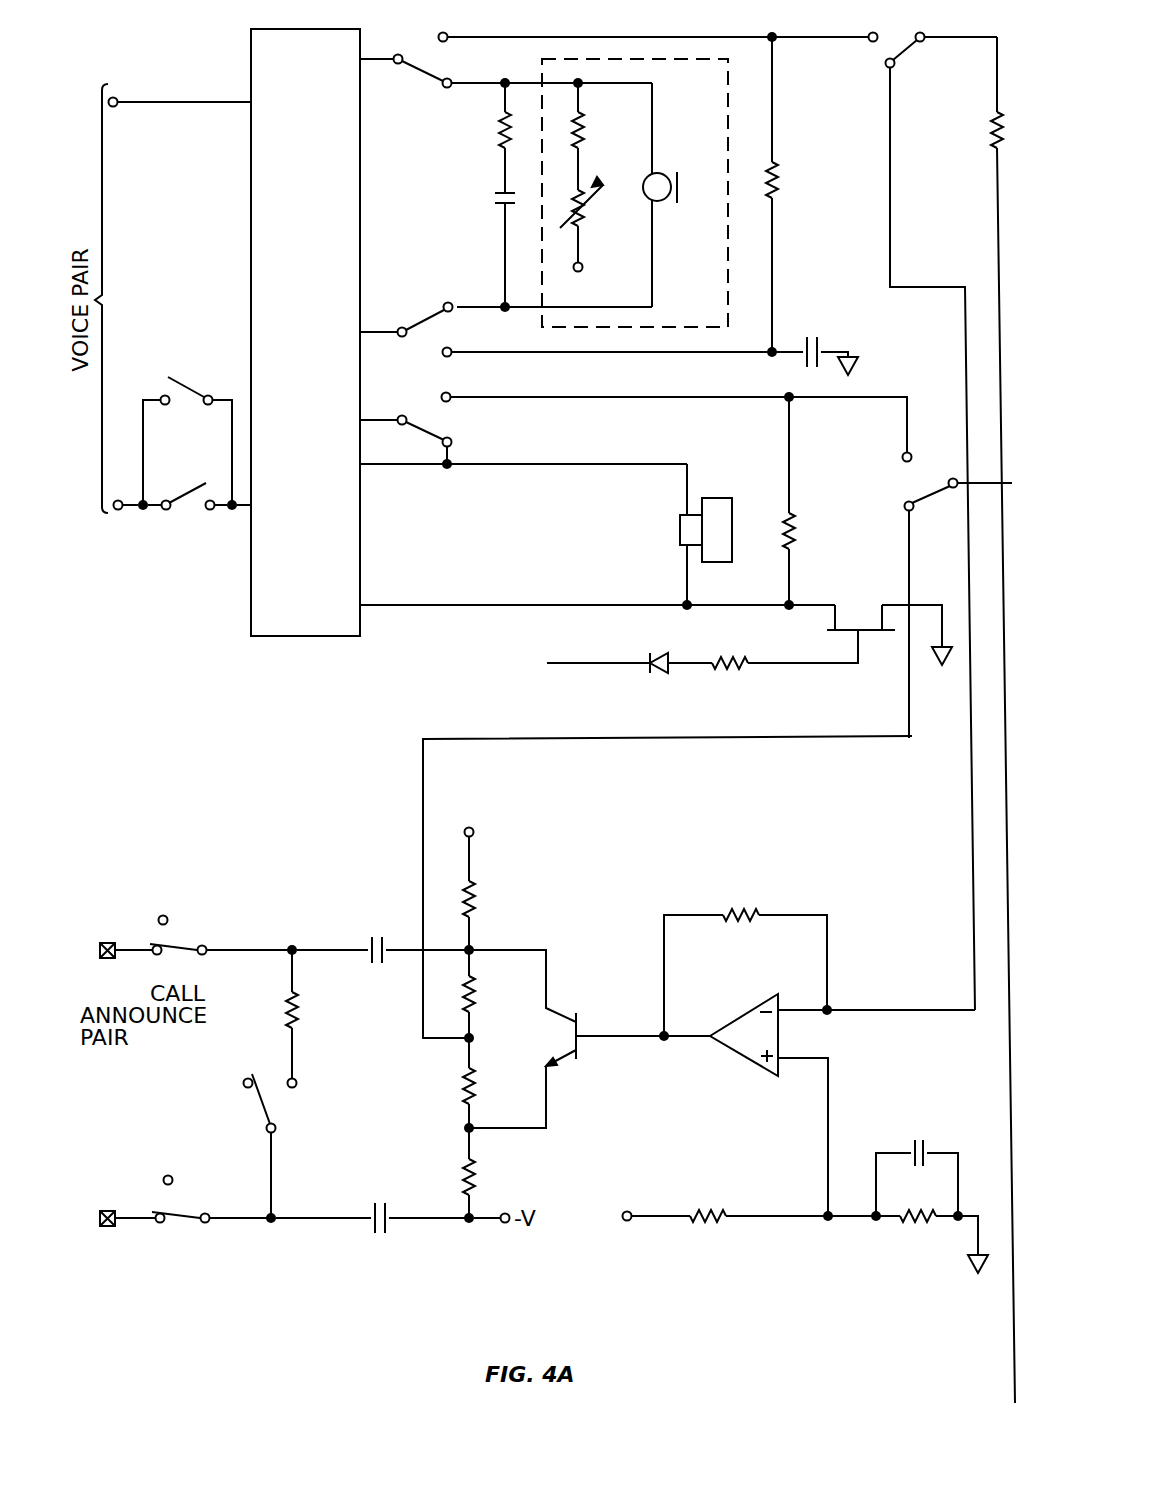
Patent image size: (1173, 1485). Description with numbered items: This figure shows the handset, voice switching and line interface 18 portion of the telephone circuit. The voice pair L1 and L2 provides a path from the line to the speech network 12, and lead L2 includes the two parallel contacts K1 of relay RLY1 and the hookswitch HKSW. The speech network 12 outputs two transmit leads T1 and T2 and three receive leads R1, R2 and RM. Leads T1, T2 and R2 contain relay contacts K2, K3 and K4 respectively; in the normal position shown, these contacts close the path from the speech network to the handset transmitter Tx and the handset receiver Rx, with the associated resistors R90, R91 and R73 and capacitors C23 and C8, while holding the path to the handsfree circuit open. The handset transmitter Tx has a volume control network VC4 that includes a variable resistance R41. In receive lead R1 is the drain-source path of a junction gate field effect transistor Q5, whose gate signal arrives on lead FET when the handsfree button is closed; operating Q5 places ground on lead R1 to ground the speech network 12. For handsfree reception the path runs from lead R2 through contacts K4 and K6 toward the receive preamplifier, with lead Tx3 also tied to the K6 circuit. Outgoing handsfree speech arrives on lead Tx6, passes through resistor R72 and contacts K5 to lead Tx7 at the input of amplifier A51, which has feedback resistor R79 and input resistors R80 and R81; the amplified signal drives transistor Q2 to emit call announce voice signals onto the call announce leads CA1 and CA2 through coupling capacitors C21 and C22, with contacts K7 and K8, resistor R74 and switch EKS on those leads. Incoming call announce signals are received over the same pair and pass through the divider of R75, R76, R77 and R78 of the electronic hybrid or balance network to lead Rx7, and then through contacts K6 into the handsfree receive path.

The speech network 12 is at (323, 637).
The line interface 18 is at (793, 1094).
The voice pair lead L1 is at (180, 91).
The voice pair lead L2 is at (183, 516).
The transmit lead T1 is at (358, 58).
The transmit lead T2 is at (360, 331).
The receive lead R2 is at (359, 419).
The receive lead RM is at (502, 463).
The receive lead R1 is at (578, 605).
The hookswitch contact HKSW is at (189, 529).
The relay contact K1 is at (187, 427).
The relay contact K2 is at (446, 78).
The relay contact K3 is at (583, 331).
The relay contact K4 is at (653, 429).
The relay contact K5 is at (916, 522).
The relay contact K6 is at (959, 609).
The relay contact K7 is at (221, 935).
The relay contact K8 is at (211, 1199).
The resistor R90 is at (480, 135).
The capacitor C23 is at (482, 247).
The volume control network VC4 is at (635, 180).
The variable resistance R41 is at (582, 187).
The handset transmitter Tx is at (599, 195).
The resistor R91 is at (796, 197).
The resistor R72 is at (981, 720).
The capacitor C8 is at (817, 343).
The handset receiver Rx is at (725, 447).
The resistor R73 is at (812, 498).
The lead Tx3 is at (963, 483).
The junction gate field effect transistor Q5 is at (851, 622).
The lead FET is at (610, 667).
The lead Rx7 is at (687, 739).
The resistor R75 is at (493, 915).
The resistor R76 is at (493, 994).
The resistor R77 is at (494, 1083).
The resistor R78 is at (494, 1173).
The transistor Q2 is at (589, 1039).
The call announce lead CA1 is at (135, 945).
The call announce lead CA2 is at (138, 1228).
The capacitor C21 is at (383, 936).
The capacitor C22 is at (372, 1205).
The resistor R74 is at (315, 1019).
The switch EKS is at (244, 1146).
The amplifier A51 is at (748, 1058).
The resistor R79 is at (745, 957).
The lead Tx7 is at (960, 1013).
The resistor R80 is at (739, 1203).
The resistor R81 is at (932, 1206).
The lead Tx6 is at (1012, 1361).